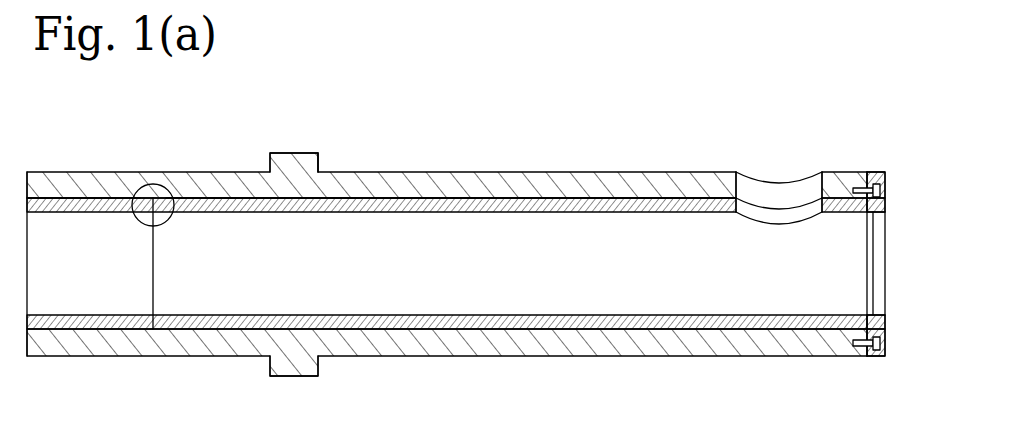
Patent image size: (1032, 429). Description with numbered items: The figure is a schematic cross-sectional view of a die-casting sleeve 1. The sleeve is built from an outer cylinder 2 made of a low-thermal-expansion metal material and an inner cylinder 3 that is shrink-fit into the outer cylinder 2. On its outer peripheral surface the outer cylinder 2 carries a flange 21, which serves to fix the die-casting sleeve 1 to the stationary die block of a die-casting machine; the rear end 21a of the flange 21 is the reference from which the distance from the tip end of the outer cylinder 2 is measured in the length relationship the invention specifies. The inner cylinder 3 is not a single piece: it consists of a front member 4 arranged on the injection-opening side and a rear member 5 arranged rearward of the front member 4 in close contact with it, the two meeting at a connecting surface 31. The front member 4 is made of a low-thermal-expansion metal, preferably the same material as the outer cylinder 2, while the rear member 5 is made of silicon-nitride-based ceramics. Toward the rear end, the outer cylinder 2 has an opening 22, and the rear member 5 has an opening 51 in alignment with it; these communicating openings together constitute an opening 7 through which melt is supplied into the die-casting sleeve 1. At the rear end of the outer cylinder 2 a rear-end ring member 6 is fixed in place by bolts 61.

The die-casting sleeve 1 is at (59, 143).
The outer cylinder 2 is at (486, 190).
The inner cylinder 3 is at (207, 131).
The front member 4 is at (105, 208).
The rear member 5 is at (188, 208).
The connecting surface 31 is at (166, 292).
The flange 21 is at (283, 151).
The rear end of the flange 21a is at (320, 163).
The opening of the outer cylinder 22 is at (752, 181).
The opening 7 is at (779, 182).
The opening of the rear member 51 is at (785, 219).
The rear-end ring member 6 is at (867, 176).
The bolts 61 is at (884, 190).